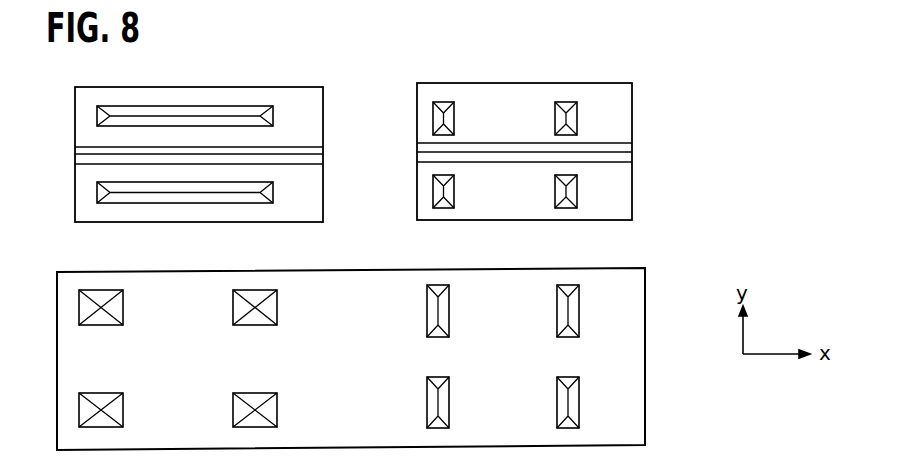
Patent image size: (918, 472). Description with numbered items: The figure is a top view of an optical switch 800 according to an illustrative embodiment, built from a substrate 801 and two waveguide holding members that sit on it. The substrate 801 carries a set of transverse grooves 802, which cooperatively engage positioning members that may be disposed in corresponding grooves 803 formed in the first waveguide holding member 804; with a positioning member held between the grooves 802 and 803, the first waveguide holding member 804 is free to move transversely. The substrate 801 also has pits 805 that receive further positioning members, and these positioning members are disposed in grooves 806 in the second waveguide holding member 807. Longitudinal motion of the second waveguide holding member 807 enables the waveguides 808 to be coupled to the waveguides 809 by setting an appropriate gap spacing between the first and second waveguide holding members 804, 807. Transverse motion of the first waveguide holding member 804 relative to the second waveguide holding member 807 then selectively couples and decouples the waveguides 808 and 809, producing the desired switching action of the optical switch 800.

The optical switch 800 is at (712, 85).
The substrate 801 is at (388, 339).
The transverse grooves 802 is at (580, 302).
The grooves 803 is at (563, 103).
The first waveguide holding member 804 is at (565, 124).
The pits 805 is at (123, 306).
The grooves 806 is at (227, 103).
The second waveguide holding member 807 is at (173, 116).
The waveguides 808 is at (632, 143).
The waveguides 809 is at (78, 147).